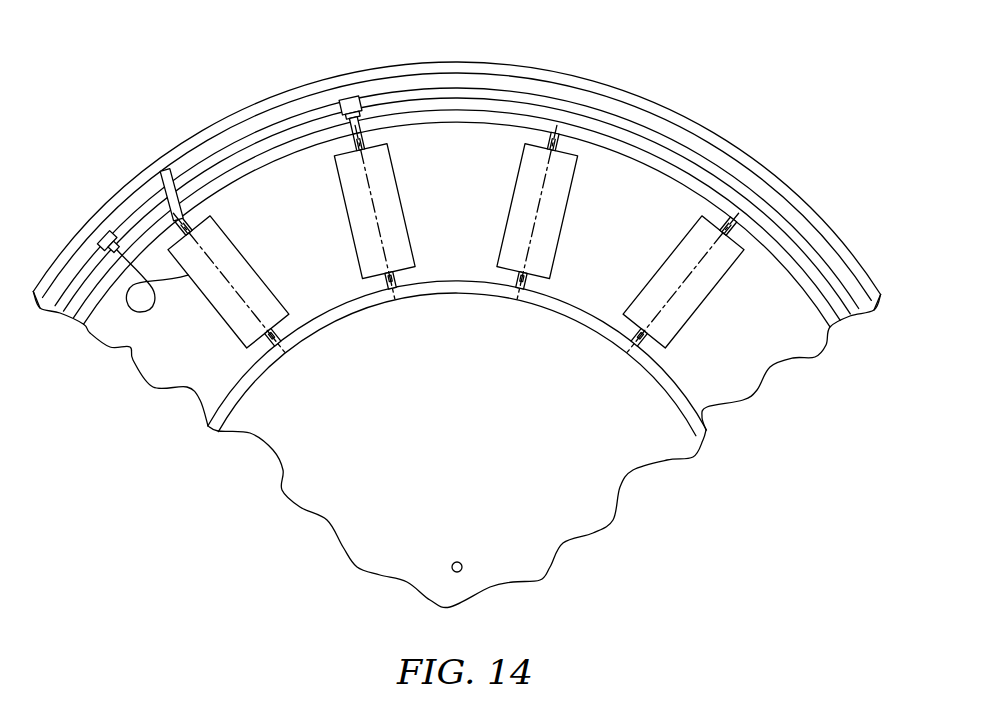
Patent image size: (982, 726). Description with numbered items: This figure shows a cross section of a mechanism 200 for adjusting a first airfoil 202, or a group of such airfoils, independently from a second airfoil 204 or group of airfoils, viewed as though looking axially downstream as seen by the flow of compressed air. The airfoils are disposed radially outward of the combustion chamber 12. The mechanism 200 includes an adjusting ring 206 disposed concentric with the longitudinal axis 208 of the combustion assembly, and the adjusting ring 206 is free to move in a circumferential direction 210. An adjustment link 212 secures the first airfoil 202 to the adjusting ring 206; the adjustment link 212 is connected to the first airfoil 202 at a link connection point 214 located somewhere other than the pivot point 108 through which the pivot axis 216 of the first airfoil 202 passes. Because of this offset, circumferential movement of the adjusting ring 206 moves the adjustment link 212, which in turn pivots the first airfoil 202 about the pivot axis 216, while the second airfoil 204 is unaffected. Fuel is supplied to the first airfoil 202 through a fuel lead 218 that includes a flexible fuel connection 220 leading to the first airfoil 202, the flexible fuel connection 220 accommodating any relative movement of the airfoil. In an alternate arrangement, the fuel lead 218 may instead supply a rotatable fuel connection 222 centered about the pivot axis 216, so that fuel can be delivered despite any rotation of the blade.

The combustion chamber 12 is at (470, 450).
The pivot point 108 is at (190, 234).
The mechanism 200 is at (162, 115).
The first airfoil 202 is at (238, 343).
The second airfoil 204 is at (393, 165).
The adjusting ring 206 is at (460, 62).
The longitudinal axis 208 is at (455, 562).
The circumferential direction 210 is at (345, 55).
The adjustment link 212 is at (158, 190).
The link connection point 214 is at (201, 215).
The pivot axis 216 is at (380, 227).
The fuel lead 218 is at (568, 100).
The flexible fuel connection 220 is at (133, 312).
The rotatable fuel connection 222 is at (357, 96).